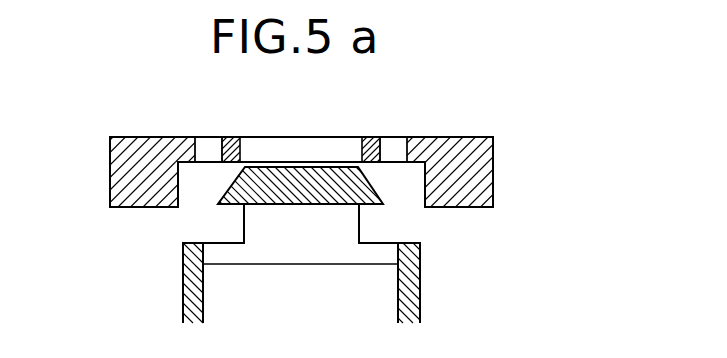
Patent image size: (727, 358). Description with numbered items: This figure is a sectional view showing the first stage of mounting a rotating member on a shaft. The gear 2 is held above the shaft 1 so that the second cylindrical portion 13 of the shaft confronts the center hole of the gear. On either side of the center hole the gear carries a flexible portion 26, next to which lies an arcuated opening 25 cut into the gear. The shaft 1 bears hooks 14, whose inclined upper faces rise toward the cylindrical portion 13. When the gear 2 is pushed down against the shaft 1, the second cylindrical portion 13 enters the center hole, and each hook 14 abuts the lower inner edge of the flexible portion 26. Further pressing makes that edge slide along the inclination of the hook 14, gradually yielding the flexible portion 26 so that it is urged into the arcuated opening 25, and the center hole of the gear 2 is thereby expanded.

The shaft 1 is at (419, 297).
The gear 2 is at (493, 159).
The second cylindrical portion 13 is at (298, 204).
The hook 14 is at (217, 195).
The arcuated opening 25 is at (205, 143).
The flexible portion 26 is at (372, 137).